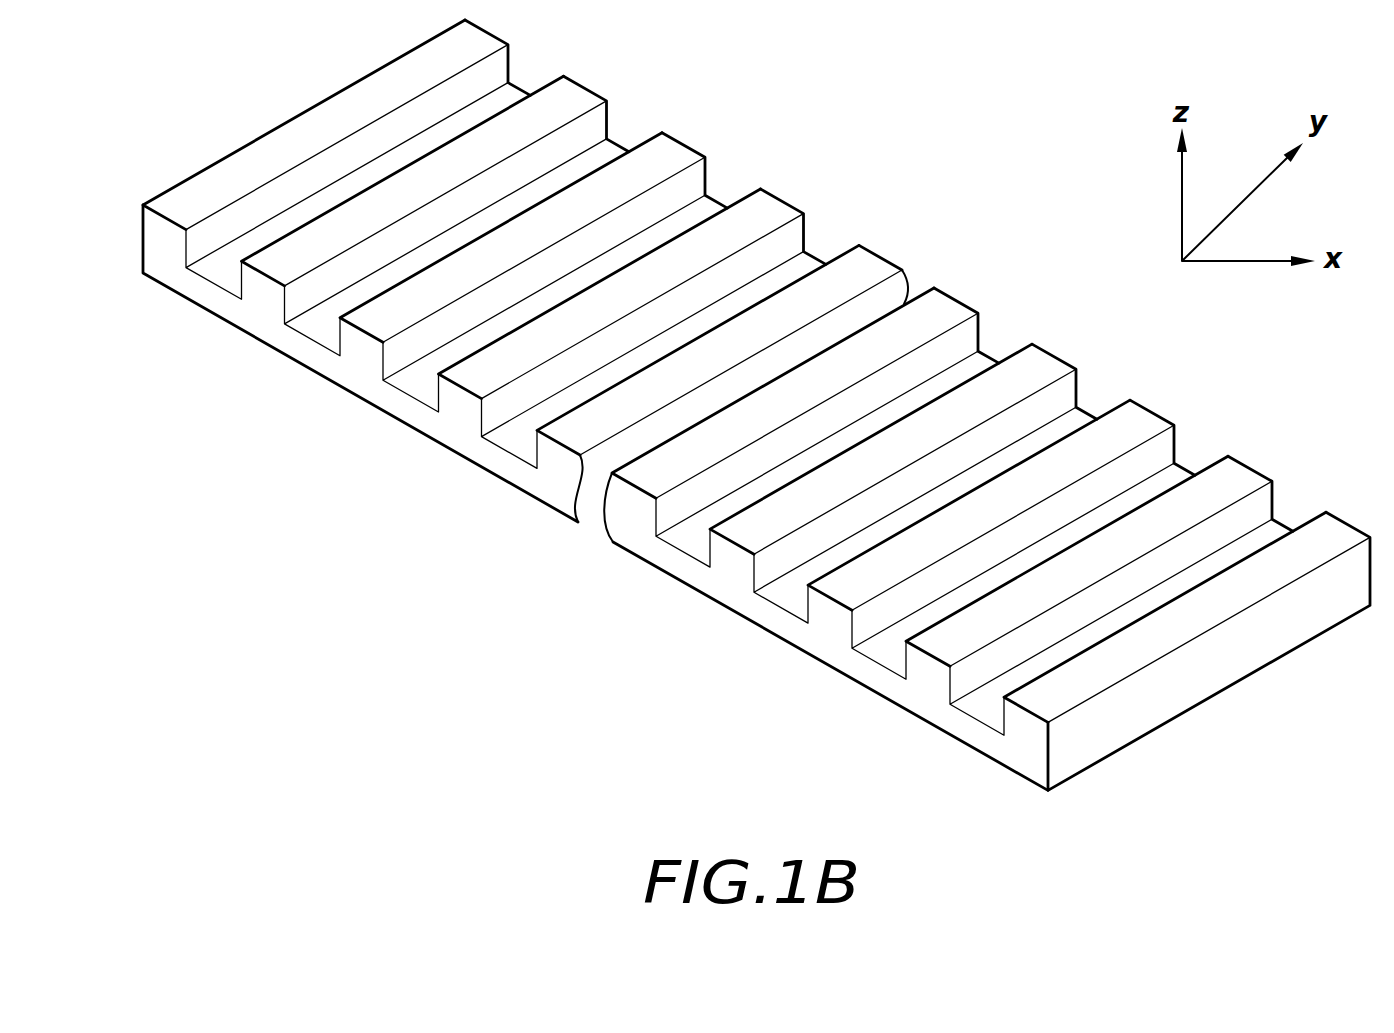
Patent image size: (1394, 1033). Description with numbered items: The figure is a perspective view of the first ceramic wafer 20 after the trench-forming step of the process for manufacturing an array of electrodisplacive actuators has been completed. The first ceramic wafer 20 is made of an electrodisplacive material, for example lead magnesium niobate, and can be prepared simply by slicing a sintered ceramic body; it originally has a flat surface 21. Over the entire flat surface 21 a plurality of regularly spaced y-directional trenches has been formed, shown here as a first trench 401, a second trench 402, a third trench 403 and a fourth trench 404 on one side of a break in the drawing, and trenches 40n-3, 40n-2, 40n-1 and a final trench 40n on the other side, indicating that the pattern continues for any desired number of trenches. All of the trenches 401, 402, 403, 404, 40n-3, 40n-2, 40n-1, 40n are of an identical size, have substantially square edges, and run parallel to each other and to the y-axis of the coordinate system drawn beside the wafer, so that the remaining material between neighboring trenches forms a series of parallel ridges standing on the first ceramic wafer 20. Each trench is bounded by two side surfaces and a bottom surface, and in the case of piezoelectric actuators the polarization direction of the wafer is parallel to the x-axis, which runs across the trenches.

The first ceramic wafer 20 is at (1157, 454).
The flat surface 21 is at (1255, 598).
The y-directional trench 401 is at (218, 273).
The y-directional trench 402 is at (320, 327).
The y-directional trench 403 is at (417, 387).
The y-directional trench 404 is at (508, 445).
The y-directional trench 40n-3 is at (680, 540).
The y-directional trench 40n-2 is at (782, 597).
The y-directional trench 40n-1 is at (878, 653).
The y-directional trench 40n is at (975, 709).